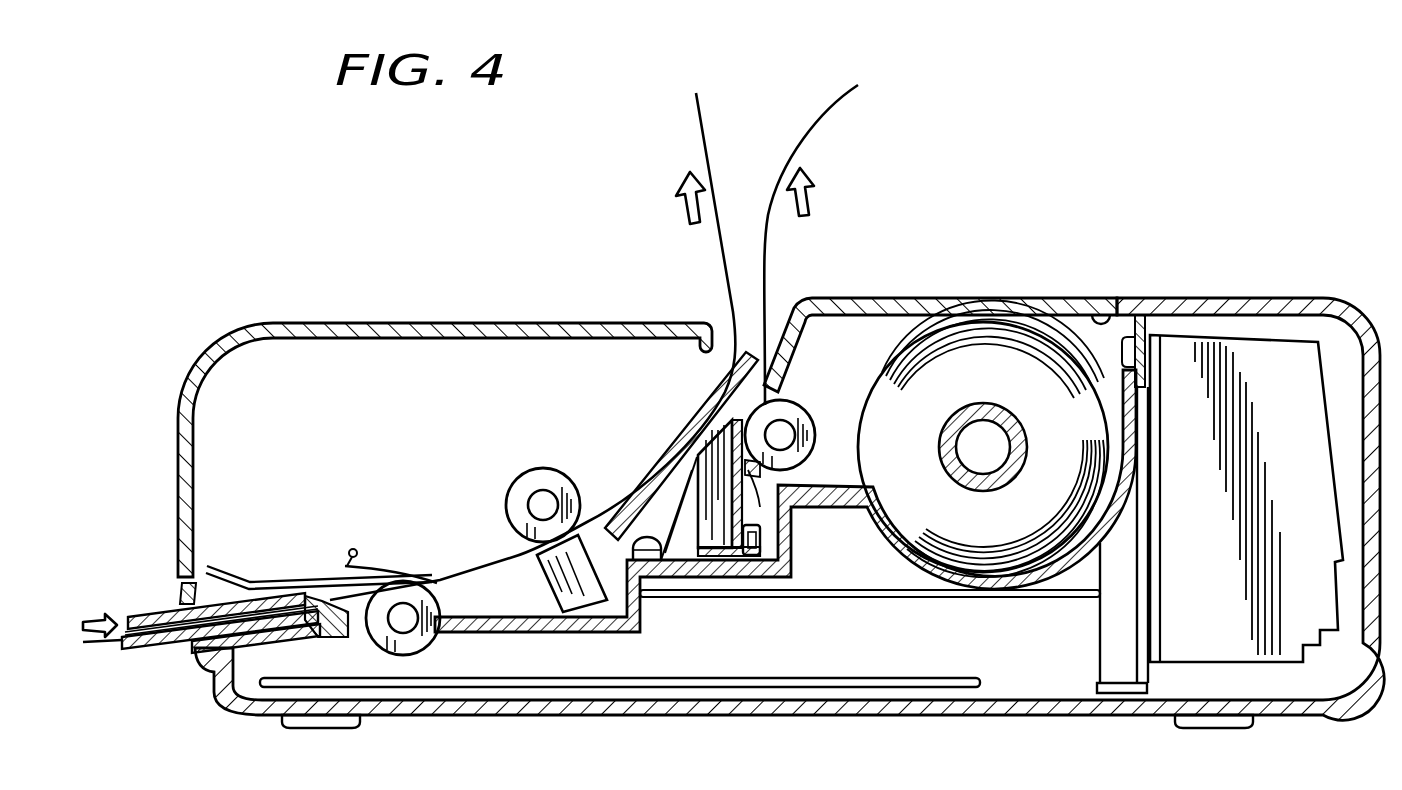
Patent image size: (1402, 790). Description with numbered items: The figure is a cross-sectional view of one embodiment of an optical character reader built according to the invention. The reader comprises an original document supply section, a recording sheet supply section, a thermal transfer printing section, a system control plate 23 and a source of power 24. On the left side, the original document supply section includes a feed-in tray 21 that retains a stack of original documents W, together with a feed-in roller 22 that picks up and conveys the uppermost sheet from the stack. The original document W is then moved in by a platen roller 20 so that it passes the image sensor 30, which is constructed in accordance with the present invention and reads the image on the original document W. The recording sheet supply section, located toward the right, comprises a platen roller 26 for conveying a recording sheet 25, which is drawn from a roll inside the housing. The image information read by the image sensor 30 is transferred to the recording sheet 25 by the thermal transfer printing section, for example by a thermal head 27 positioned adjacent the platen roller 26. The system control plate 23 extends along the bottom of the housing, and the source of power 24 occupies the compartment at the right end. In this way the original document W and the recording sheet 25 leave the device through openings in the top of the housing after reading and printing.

The platen roller 20 is at (532, 492).
The feed-in tray 21 is at (165, 610).
The feed-in roller 22 is at (385, 645).
The system control plate 23 is at (878, 676).
The source of power 24 is at (1262, 366).
The recording sheet 25 is at (897, 410).
The platen roller 26 is at (788, 412).
The thermal head 27 is at (710, 508).
The image sensor 30 is at (553, 588).
The original document W is at (700, 130).